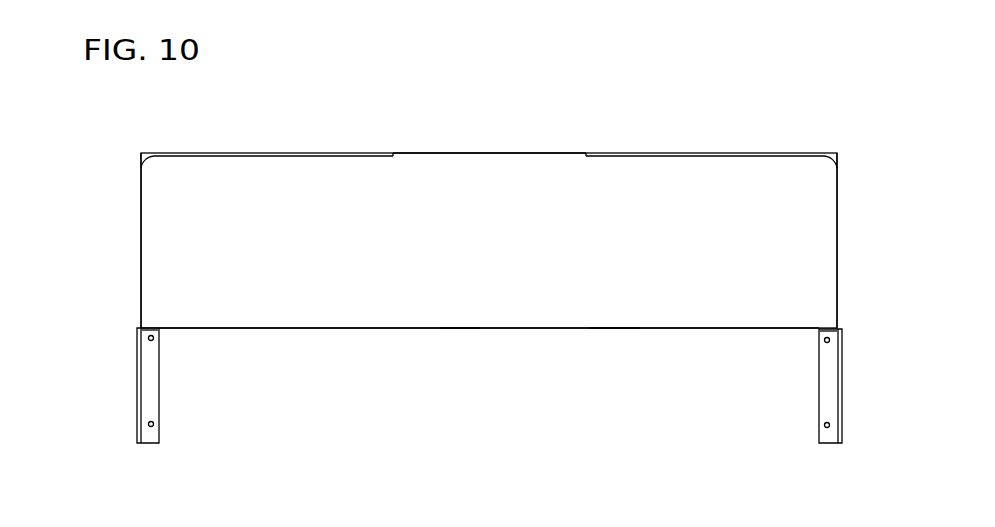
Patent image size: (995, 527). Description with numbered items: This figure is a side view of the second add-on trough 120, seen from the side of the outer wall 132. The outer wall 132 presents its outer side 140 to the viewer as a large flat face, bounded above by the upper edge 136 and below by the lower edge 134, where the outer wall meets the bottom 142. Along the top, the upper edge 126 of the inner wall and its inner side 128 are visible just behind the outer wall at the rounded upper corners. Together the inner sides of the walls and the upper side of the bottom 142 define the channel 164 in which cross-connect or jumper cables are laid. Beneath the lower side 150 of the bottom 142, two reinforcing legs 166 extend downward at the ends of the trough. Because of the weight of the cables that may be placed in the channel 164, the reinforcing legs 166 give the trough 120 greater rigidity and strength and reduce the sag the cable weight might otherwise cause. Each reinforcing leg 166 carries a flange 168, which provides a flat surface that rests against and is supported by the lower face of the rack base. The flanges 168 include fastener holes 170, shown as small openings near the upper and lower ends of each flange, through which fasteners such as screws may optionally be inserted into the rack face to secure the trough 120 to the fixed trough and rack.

The second add-on trough 120 is at (106, 161).
The upper edge of inner wall 126 is at (212, 153).
The inner side of inner wall 128 is at (141, 152).
The outer wall 132 is at (152, 234).
The lower edge of outer wall 134 is at (610, 329).
The upper edge of outer wall 136 is at (509, 154).
The outer side of outer wall 140 is at (437, 258).
The bottom 142 is at (387, 341).
The lower side of bottom 150 is at (457, 329).
The channel 164 is at (846, 238).
The reinforcing legs 166 is at (137, 398).
The flange 168 is at (153, 393).
The fastener holes 170 is at (154, 425).